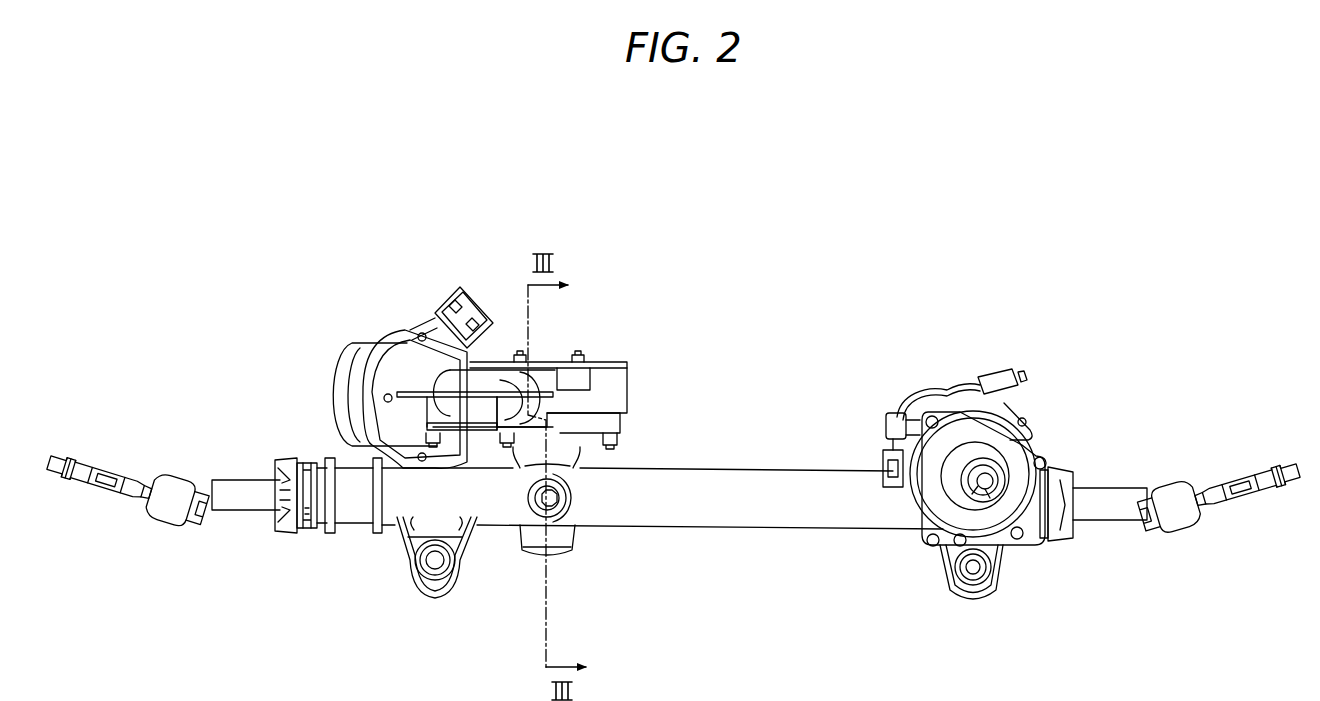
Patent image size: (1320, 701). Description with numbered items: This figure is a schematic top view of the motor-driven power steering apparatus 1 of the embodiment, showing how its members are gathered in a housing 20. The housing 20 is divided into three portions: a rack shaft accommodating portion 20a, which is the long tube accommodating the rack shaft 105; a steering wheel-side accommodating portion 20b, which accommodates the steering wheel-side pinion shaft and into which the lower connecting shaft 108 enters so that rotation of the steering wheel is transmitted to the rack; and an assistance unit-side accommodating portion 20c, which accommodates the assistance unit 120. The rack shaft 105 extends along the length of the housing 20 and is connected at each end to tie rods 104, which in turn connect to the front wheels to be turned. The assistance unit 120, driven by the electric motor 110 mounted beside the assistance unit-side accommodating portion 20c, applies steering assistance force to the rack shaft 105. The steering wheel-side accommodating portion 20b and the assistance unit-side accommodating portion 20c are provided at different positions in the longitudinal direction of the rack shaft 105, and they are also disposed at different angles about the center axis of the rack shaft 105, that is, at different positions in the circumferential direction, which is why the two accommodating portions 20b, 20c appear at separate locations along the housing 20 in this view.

The motor-driven power steering apparatus 1 is at (300, 268).
The housing 20 is at (771, 593).
The rack shaft accommodating portion 20a is at (755, 460).
The steering wheel-side accommodating portion 20b is at (948, 420).
The assistance unit-side accommodating portion 20c is at (605, 360).
The tie rods 104 is at (128, 472).
The rack shaft 105 is at (222, 485).
The lower connecting shaft 108 is at (1007, 466).
The electric motor 110 is at (352, 366).
The assistance unit 120 is at (649, 369).